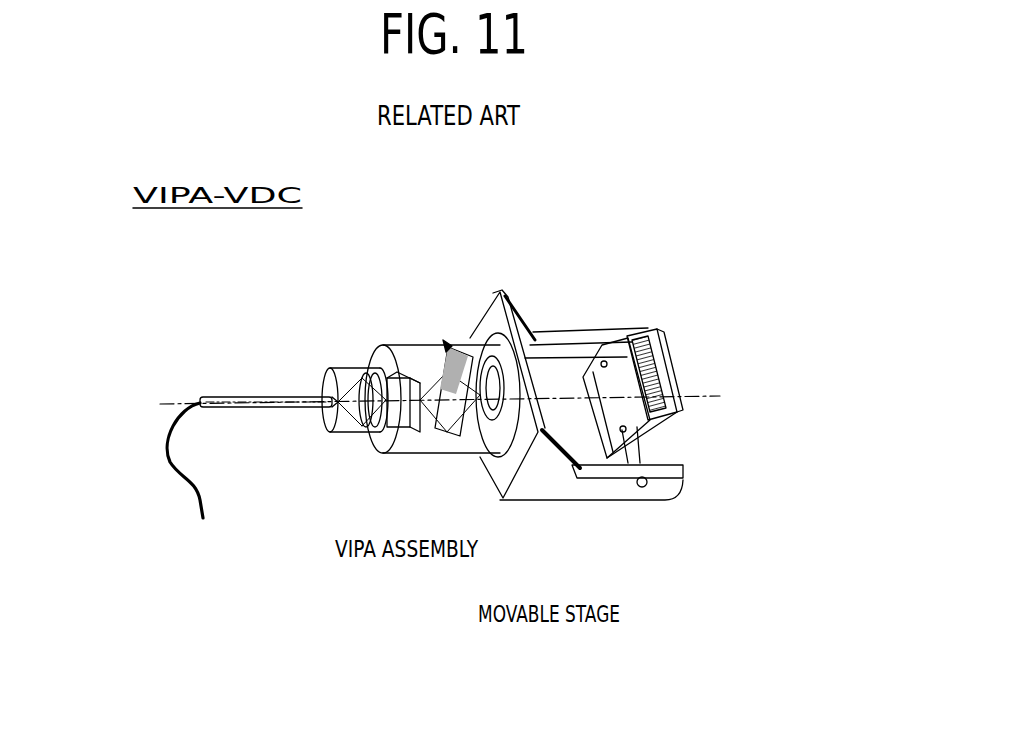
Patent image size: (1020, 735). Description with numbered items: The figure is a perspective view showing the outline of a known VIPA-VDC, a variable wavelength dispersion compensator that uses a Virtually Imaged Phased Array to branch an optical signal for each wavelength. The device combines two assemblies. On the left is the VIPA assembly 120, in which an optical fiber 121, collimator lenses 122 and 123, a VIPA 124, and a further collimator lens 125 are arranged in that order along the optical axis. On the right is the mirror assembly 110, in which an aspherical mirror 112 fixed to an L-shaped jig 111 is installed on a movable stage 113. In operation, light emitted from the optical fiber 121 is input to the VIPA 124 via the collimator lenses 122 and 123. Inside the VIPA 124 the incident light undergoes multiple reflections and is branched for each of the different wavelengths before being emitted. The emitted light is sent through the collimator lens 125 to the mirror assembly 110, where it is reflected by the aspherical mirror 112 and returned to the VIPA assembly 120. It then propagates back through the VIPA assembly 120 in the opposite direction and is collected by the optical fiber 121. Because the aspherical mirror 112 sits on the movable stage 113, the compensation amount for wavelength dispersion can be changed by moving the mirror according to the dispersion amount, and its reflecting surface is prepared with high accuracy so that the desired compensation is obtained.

The mirror assembly 110 is at (565, 279).
The L-shaped jig 111 is at (652, 476).
The aspherical mirror 112 is at (640, 332).
The movable stage 113 is at (600, 505).
The VIPA assembly 120 is at (425, 467).
The optical fiber 121 is at (262, 406).
The collimator lens 122 is at (362, 352).
The collimator lens 123 is at (402, 348).
The VIPA 124 is at (447, 344).
The collimator lens 125 is at (481, 342).